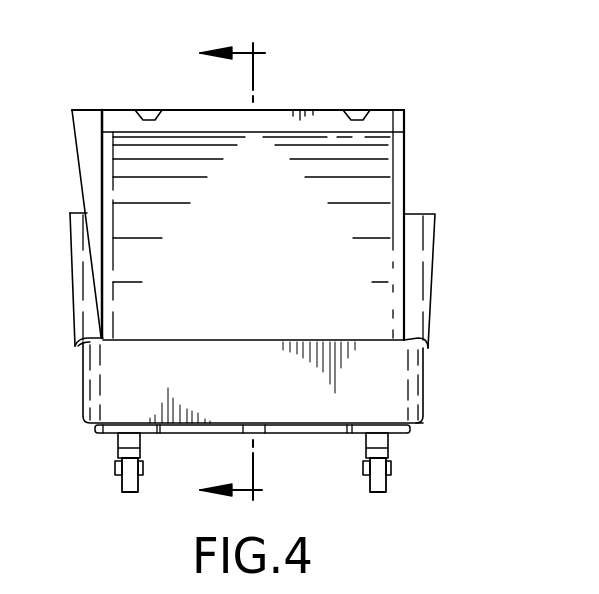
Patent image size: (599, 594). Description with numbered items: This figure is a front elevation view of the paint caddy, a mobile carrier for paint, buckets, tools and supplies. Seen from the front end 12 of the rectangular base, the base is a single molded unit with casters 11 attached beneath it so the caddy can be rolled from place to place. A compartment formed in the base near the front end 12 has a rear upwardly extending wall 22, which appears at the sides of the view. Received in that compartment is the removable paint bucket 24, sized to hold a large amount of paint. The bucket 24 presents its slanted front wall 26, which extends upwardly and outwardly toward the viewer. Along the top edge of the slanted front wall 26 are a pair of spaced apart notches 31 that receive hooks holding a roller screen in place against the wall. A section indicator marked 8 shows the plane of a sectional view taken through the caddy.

The section line 8- 8 is at (221, 273).
The casters 11 is at (113, 482).
The front end 12 is at (357, 382).
The rear upwardly extending wall 22 is at (415, 257).
The removable paint bucket 24 is at (404, 165).
The slanted front wall 26 is at (268, 228).
The notches 31 is at (150, 113).